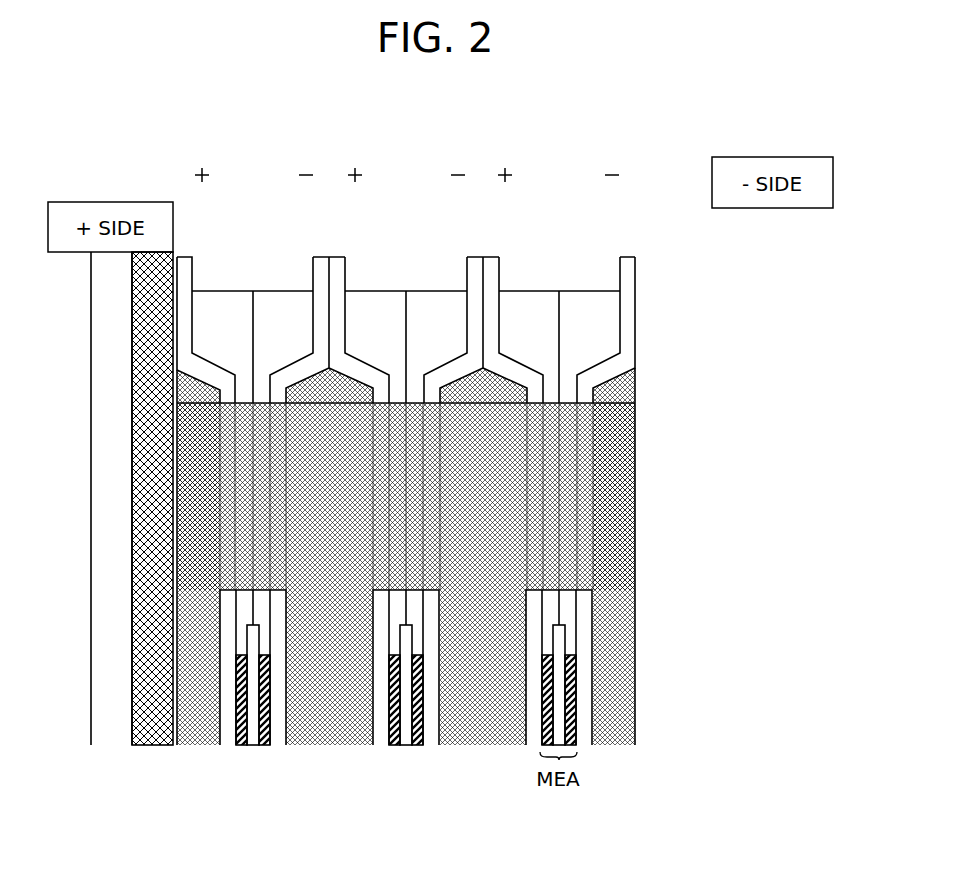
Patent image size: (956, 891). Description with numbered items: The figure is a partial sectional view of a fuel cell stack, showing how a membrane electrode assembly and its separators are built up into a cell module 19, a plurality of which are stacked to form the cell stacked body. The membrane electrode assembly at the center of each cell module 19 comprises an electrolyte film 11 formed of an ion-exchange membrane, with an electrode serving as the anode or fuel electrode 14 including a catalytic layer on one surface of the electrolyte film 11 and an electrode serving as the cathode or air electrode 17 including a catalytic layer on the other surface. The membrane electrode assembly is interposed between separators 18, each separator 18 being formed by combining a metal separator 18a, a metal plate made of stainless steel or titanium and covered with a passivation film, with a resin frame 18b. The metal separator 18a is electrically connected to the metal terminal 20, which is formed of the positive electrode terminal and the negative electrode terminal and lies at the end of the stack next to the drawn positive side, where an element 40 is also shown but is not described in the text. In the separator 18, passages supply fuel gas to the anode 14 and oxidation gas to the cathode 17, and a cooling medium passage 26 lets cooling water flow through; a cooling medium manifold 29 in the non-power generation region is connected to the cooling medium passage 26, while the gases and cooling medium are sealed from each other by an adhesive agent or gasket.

The separator 18 is at (446, 525).
The metal separator 18a is at (318, 257).
The resin frame 18b is at (577, 333).
The insulating layer 40 is at (128, 383).
The metal terminal 20 is at (113, 723).
The cooling medium manifold 29 is at (644, 403).
The cooling medium passage 26 is at (483, 733).
The cell module 19 is at (220, 752).
The electrode (cathode, air electrode) 17 is at (393, 743).
The electrode (anode, fuel electrode) 14 is at (417, 740).
The electrolyte film 11 is at (405, 738).